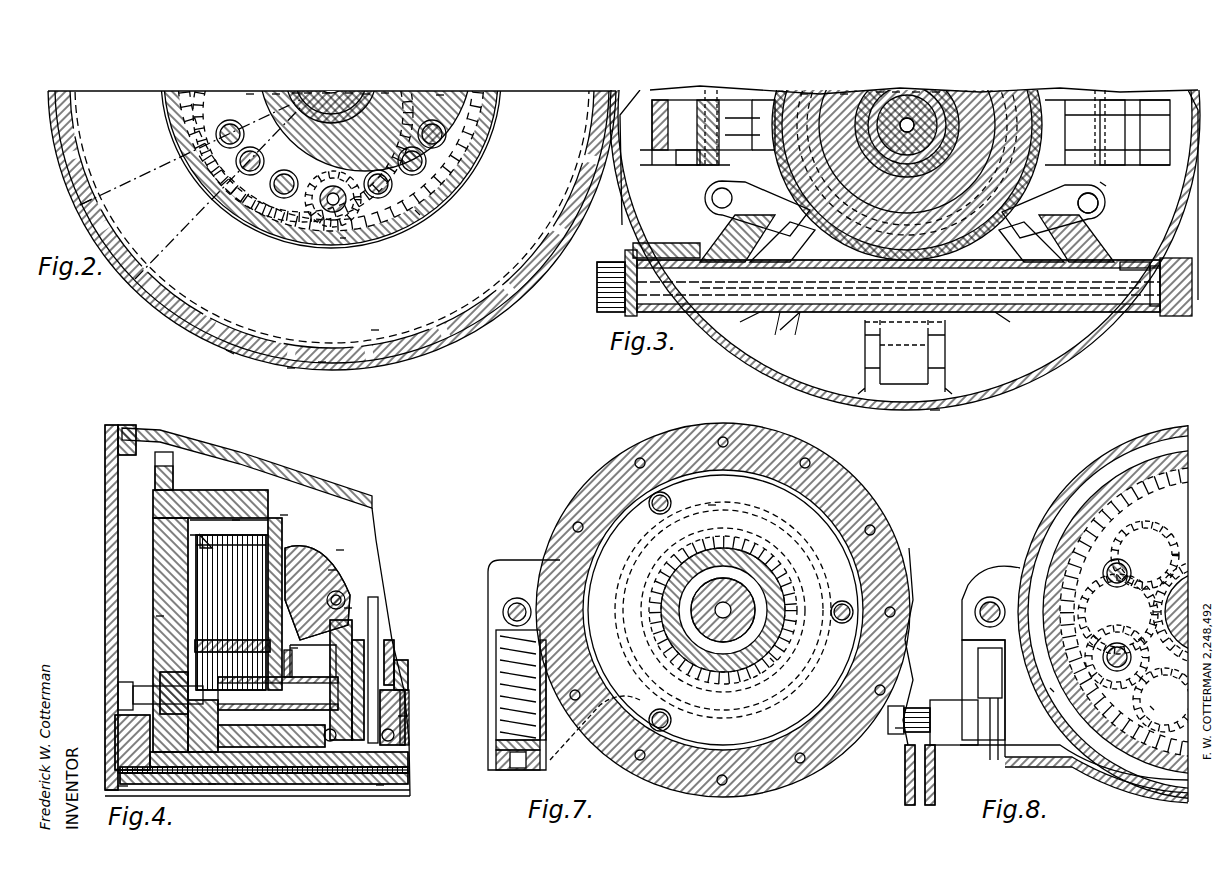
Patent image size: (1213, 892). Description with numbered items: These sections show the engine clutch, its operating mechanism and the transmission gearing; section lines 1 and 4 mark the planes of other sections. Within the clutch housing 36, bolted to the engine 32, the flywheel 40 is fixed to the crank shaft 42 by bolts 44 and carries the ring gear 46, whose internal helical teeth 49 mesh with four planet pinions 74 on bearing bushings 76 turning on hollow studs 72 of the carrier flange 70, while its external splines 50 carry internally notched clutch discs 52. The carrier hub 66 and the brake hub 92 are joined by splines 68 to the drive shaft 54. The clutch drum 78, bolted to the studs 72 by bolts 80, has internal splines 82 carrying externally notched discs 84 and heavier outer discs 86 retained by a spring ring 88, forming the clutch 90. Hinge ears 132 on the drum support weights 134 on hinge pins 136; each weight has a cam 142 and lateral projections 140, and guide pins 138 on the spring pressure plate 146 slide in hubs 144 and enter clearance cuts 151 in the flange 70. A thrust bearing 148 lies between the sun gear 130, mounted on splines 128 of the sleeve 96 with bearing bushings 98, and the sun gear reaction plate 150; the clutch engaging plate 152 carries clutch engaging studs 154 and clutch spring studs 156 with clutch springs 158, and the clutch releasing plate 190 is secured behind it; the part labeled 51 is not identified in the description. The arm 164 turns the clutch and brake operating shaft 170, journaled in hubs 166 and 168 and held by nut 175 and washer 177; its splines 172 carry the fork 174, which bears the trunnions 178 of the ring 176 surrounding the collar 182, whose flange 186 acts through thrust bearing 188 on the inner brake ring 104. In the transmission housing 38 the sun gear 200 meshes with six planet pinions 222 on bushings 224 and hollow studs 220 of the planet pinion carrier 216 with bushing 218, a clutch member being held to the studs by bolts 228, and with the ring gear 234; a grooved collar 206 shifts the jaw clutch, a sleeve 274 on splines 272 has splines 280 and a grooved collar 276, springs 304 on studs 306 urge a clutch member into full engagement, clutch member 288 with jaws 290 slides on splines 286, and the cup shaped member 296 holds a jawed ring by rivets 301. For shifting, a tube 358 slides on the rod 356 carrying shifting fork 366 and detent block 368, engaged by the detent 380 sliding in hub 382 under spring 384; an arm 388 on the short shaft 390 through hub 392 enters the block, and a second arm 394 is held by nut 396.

In FIG. 2, the section line 1 is at (92, 204).
In FIG. 2, the section line 4 is at (349, 93).
In FIG. 4, the engine 32 is at (110, 480).
In FIG. 3, the clutch housing 36 is at (935, 411).
In FIG. 4, the clutch housing 36 is at (160, 437).
In FIG. 7, the transmission housing 38 is at (840, 512).
In FIG. 8, the transmission housing 38 is at (1046, 492).
In FIG. 4, the flywheel 40 is at (155, 505).
In FIG. 4, the crank shaft 42 is at (136, 690).
In FIG. 4, the bolts 44 is at (128, 680).
In FIG. 2, the ring gear 46 is at (372, 230).
In FIG. 4, the ring gear 46 is at (160, 620).
In FIG. 2, the helical gear teeth 49 is at (268, 226).
In FIG. 4, the helical gear teeth 49 is at (296, 650).
In FIG. 2, the splines 50 is at (297, 236).
In FIG. 4, the plate 51 is at (270, 640).
In FIG. 2, the internally notched clutch discs 52 is at (291, 368).
In FIG. 4, the internally notched clutch discs 52 is at (222, 520).
In FIG. 3, the drive shaft 54 is at (907, 118).
In FIG. 4, the drive shaft 54 is at (118, 788).
In FIG. 7, the drive shaft 54 is at (722, 612).
In FIG. 2, the long hub 66 is at (366, 94).
In FIG. 4, the long hub 66 is at (238, 784).
In FIG. 2, the splines 68 is at (326, 93).
In FIG. 3, the splines 68 is at (916, 92).
In FIG. 4, the splines 68 is at (330, 784).
In FIG. 4, the flange 70 is at (196, 784).
In FIG. 2, the hollow studs 72 is at (250, 94).
In FIG. 2, the planet pinions 74 is at (322, 246).
In FIG. 2, the bearing bushings 76 is at (345, 242).
In FIG. 2, the clutch drum 78 is at (230, 350).
In FIG. 4, the clutch drum 78 is at (312, 548).
In FIG. 2, the bolts 80 is at (440, 95).
In FIG. 2, the internal splines 82 is at (322, 362).
In FIG. 4, the internal splines 82 is at (248, 515).
In FIG. 2, the externally notched clutch discs 84 is at (375, 330).
In FIG. 4, the externally notched clutch discs 84 is at (236, 520).
In FIG. 4, the heavier outer discs 86 is at (210, 568).
In FIG. 4, the spring ring 88 is at (200, 542).
In FIG. 4, the clutch 90 is at (284, 515).
In FIG. 3, the long hub 92 is at (896, 92).
In FIG. 4, the long hub 92 is at (380, 785).
In FIG. 2, the sleeve 96 is at (296, 93).
In FIG. 3, the sleeve 96 is at (880, 92).
In FIG. 4, the sleeve 96 is at (408, 751).
In FIG. 2, the bearing bushings 98 is at (308, 93).
In FIG. 3, the bearing bushings 98 is at (936, 92).
In FIG. 4, the bearing bushings 98 is at (408, 770).
In FIG. 3, the inner ring of the sun gear brake 104 is at (845, 94).
In FIG. 4, the inner ring of the sun gear brake 104 is at (408, 720).
In FIG. 2, the splines 128 is at (385, 93).
In FIG. 4, the splines 128 is at (292, 785).
In FIG. 2, the sun gear 130 is at (276, 94).
In FIG. 4, the sun gear 130 is at (318, 790).
In FIG. 3, the hinge ears 132 is at (660, 160).
In FIG. 4, the hinge ears 132 is at (340, 590).
In FIG. 3, the weight 134 is at (668, 129).
In FIG. 4, the weight 134 is at (340, 550).
In FIG. 3, the hinge pin 136 is at (732, 95).
In FIG. 4, the hinge pin 136 is at (348, 608).
In FIG. 2, the guide pins 138 is at (418, 214).
In FIG. 4, the guide pins 138 is at (316, 690).
In FIG. 3, the lateral projections 140 is at (700, 160).
In FIG. 4, the lateral projections 140 is at (332, 570).
In FIG. 3, the cam 142 is at (744, 108).
In FIG. 4, the cam 142 is at (378, 612).
In FIG. 2, the hubs 144 is at (462, 192).
In FIG. 4, the hubs 144 is at (286, 660).
In FIG. 4, the clutch-spring pressure plate 146 is at (330, 640).
In FIG. 4, the thrust bearing 148 is at (310, 721).
In FIG. 4, the sun gear reaction plate 150 is at (390, 640).
In FIG. 4, the clearance cuts 151 is at (215, 689).
In FIG. 3, the clutch engaging plate 152 is at (1104, 186).
In FIG. 4, the clutch engaging plate 152 is at (368, 640).
In FIG. 3, the clutch engaging studs 154 is at (1099, 203).
In FIG. 2, the clutch spring studs 156 is at (462, 152).
In FIG. 4, the clutch spring studs 156 is at (118, 770).
In FIG. 2, the clutch spring 158 is at (466, 175).
In FIG. 3, the arm 164 is at (612, 252).
In FIG. 4, the arm 164 is at (212, 784).
In FIG. 3, the hub 166 is at (680, 262).
In FIG. 3, the hub 168 is at (1140, 262).
In FIG. 3, the clutch and brake operating shaft 170 is at (600, 290).
In FIG. 3, the splines 172 is at (796, 312).
In FIG. 3, the clutch and brake operating fork 174 is at (762, 192).
In FIG. 3, the nut 175 is at (1178, 305).
In FIG. 3, the ring 176 is at (1026, 92).
In FIG. 3, the washer 177 is at (1180, 270).
In FIG. 3, the trunnions 178 is at (1060, 126).
In FIG. 3, the clutch and brake operating collar 182 is at (805, 94).
In FIG. 4, the clutch and brake operating collar 182 is at (410, 700).
In FIG. 4, the flange 186 is at (402, 692).
In FIG. 4, the thrust bearing 188 is at (392, 735).
In FIG. 4, the clutch releasing plate 190 is at (390, 665).
In FIG. 8, the sun gear 200 is at (1185, 560).
In FIG. 7, the grooved collar 206 is at (722, 578).
In FIG. 7, the planet pinion carrier 216 is at (770, 565).
In FIG. 7, the bearing bushing 218 is at (782, 598).
In FIG. 8, the hollow studs 220 is at (1152, 706).
In FIG. 8, the planet pinions 222 is at (1112, 612).
In FIG. 8, the bearing bushings 224 is at (1117, 640).
In FIG. 8, the bolts 228 is at (1160, 688).
In FIG. 8, the ring gear 234 is at (1150, 540).
In FIG. 7, the external splines 272 is at (784, 605).
In FIG. 7, the sleeve 274 is at (782, 625).
In FIG. 7, the grooved collar 276 is at (712, 505).
In FIG. 7, the external splines 280 is at (772, 660).
In FIG. 8, the splines 286 is at (1050, 558).
In FIG. 8, the clutch member 288 is at (1052, 690).
In FIG. 8, the external jaws 290 is at (1060, 712).
In FIG. 8, the cup shaped member 296 is at (1032, 522).
In FIG. 7, the rivets 301 is at (575, 526).
In FIG. 7, the springs 304 is at (845, 624).
In FIG. 7, the studs 306 is at (845, 612).
In FIG. 7, the rod 356 is at (540, 618).
In FIG. 8, the rod 356 is at (974, 626).
In FIG. 7, the tube 358 is at (540, 600).
In FIG. 8, the tube 358 is at (974, 606).
In FIG. 7, the shifting fork 366 is at (728, 500).
In FIG. 7, the detent block 368 is at (500, 590).
In FIG. 8, the detent block 368 is at (976, 590).
In FIG. 7, the detent 380 is at (500, 712).
In FIG. 7, the hub 382 is at (498, 758).
In FIG. 7, the spring 384 is at (498, 738).
In FIG. 8, the arm 388 is at (985, 665).
In FIG. 8, the short shaft 390 is at (940, 708).
In FIG. 8, the hub 392 is at (938, 750).
In FIG. 8, the second arm 394 is at (906, 706).
In FIG. 8, the nut 396 is at (900, 728).